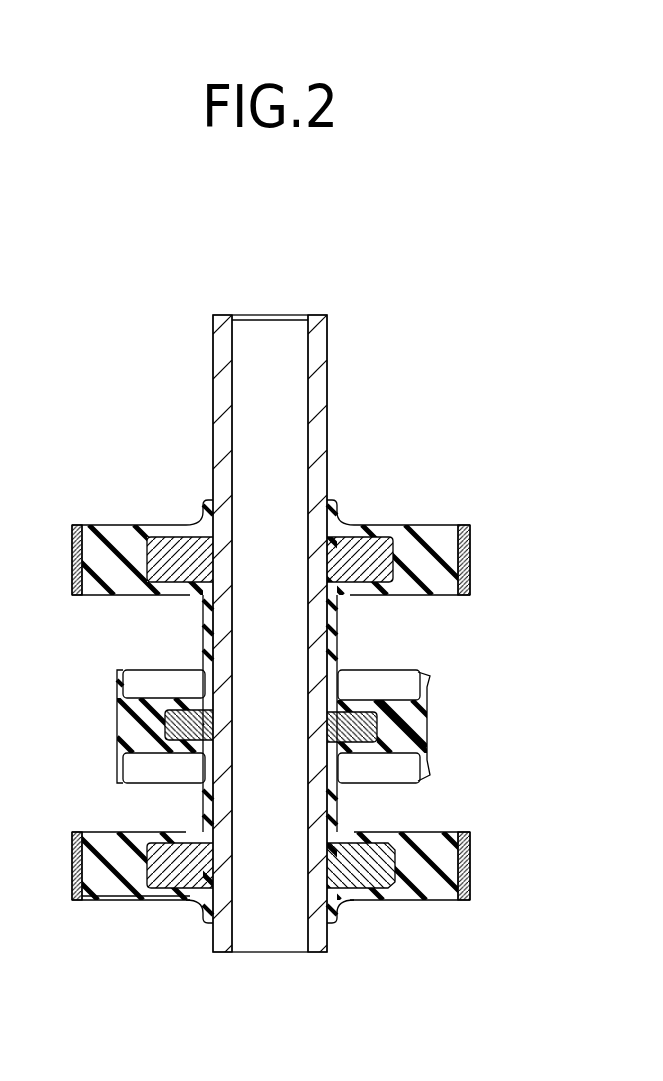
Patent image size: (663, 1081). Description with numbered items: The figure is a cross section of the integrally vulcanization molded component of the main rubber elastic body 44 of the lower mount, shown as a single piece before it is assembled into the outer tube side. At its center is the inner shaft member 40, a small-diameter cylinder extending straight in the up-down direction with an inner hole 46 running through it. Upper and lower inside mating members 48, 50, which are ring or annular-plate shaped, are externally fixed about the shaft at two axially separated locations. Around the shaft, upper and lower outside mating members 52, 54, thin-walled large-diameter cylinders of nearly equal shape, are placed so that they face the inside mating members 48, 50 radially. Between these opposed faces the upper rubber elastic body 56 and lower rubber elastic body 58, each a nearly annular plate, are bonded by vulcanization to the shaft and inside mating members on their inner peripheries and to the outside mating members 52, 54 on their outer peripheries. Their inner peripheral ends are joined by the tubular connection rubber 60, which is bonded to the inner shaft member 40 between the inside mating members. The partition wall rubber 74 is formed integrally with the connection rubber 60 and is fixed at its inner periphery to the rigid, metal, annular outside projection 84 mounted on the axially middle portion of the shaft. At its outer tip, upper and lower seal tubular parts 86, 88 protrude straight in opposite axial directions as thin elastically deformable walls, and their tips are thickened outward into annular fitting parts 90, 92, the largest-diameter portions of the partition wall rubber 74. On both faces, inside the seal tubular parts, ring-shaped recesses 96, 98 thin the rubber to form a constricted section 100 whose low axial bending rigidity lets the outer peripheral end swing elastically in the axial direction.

The inner shaft member 40 is at (318, 935).
The main rubber elastic body 44 is at (121, 904).
The inner hole 46 is at (235, 920).
The upper inside mating member 48 is at (187, 558).
The lower inside mating member 50 is at (185, 870).
The upper outside mating member 52 is at (286, 536).
The lower outside mating member 54 is at (278, 895).
The upper rubber elastic body 56 is at (417, 552).
The lower rubber elastic body 58 is at (427, 870).
The connection rubber 60 is at (213, 650).
The partition wall rubber 74 is at (276, 726).
The outside projection 84 is at (345, 727).
The upper seal tubular part 86 is at (122, 697).
The lower seal tubular part 88 is at (122, 756).
The annular fitting part 90 is at (118, 682).
The annular fitting part 92 is at (118, 775).
The recess 96 is at (412, 699).
The recess 98 is at (412, 755).
The constricted section 100 is at (412, 727).